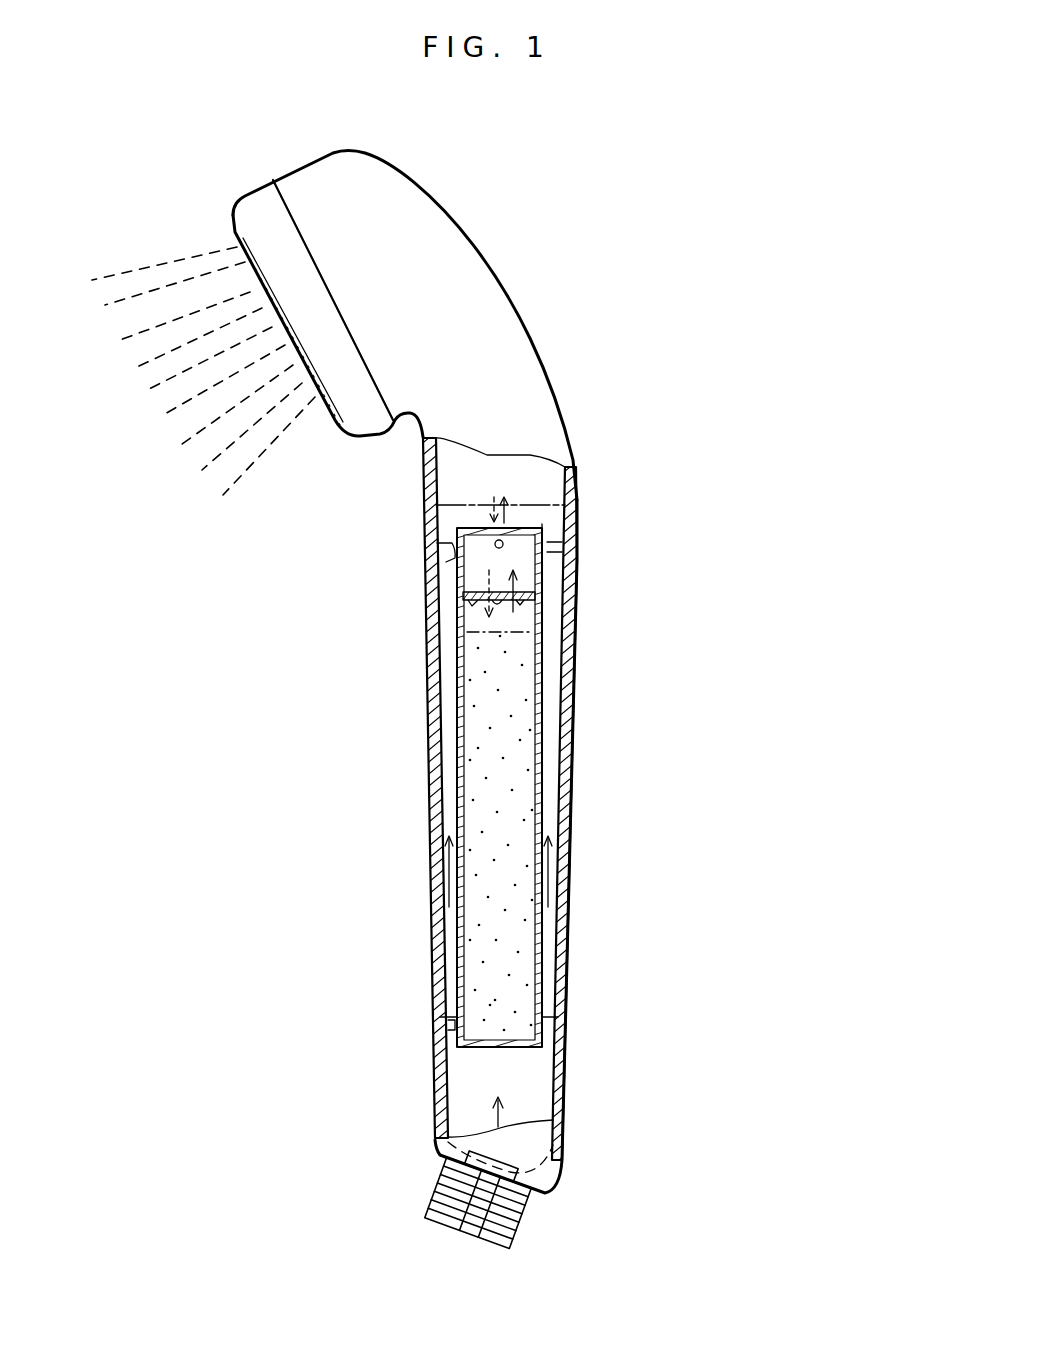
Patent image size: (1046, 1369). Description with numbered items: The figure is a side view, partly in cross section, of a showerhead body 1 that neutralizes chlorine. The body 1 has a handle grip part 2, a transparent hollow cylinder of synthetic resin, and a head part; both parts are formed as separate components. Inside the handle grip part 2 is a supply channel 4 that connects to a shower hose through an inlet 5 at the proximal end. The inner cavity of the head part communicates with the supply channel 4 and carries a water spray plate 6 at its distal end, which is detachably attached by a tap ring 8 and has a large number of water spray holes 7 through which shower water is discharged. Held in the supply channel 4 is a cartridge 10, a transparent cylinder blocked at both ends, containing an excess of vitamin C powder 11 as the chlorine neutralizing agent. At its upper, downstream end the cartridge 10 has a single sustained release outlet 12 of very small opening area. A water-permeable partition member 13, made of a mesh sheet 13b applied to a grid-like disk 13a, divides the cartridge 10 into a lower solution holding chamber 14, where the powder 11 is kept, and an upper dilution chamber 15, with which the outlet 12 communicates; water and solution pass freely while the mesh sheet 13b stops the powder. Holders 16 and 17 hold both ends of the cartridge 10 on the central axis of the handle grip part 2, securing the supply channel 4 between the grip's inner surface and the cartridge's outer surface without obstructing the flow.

The body of showerhead 1 is at (386, 696).
The handle grip part 2 is at (489, 796).
The supply channel 4 is at (447, 623).
The inlet 5 is at (447, 1228).
The water spray plate 6 is at (237, 247).
The water spray holes 7 is at (302, 372).
The tap ring 8 is at (258, 193).
The cartridge 10 is at (543, 702).
The powder 11 is at (507, 777).
The sustained release outlet 12 is at (503, 546).
The water-permeable partition member 13 is at (570, 630).
The grid-like disk 13a is at (527, 598).
The mesh sheet 13b is at (533, 600).
The solution holding chamber 14 is at (477, 735).
The dilution chamber 15 is at (478, 568).
The holder 16 is at (450, 1027).
The holder 17 is at (455, 565).